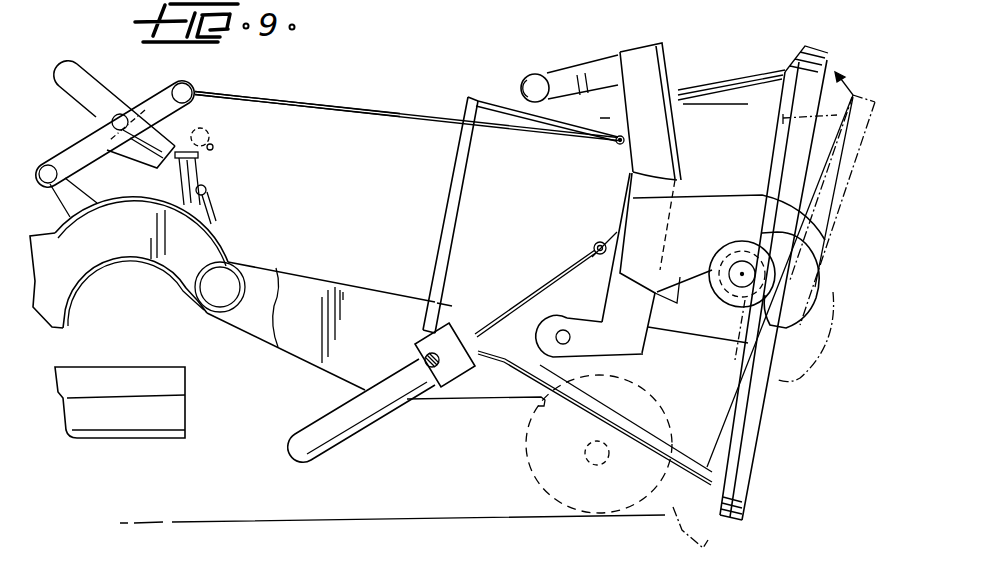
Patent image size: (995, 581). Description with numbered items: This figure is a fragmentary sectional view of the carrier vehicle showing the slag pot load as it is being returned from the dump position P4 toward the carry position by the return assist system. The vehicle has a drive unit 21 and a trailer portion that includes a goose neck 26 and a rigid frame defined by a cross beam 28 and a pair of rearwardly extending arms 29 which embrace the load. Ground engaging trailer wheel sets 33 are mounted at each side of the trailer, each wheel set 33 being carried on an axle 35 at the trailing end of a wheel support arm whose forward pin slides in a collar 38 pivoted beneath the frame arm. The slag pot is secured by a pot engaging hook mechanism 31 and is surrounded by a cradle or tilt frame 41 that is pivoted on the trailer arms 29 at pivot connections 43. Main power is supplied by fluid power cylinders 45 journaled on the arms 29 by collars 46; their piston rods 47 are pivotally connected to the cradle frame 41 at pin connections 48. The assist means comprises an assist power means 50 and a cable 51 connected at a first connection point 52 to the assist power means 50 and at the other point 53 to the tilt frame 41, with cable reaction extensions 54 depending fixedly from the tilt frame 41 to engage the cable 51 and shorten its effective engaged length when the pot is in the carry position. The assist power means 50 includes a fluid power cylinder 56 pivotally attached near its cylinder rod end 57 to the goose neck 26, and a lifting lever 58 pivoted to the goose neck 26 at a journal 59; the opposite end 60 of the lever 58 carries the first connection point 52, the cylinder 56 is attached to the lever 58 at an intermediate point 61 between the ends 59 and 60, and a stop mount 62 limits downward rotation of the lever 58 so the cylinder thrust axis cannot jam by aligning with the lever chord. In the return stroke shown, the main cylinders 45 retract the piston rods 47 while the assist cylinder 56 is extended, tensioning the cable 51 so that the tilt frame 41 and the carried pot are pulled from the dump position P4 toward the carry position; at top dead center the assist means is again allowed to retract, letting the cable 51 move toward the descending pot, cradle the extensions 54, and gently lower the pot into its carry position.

The drive unit 21 is at (151, 437).
The goose neck 26 is at (133, 250).
The cross beam 28 is at (203, 290).
The rearwardly extending arms 29 is at (360, 263).
The pot engaging hook mechanism 31 is at (820, 281).
The ground engaging trailer wheel sets 33 is at (550, 450).
The axle 35 is at (592, 462).
The collar 38 is at (528, 76).
The cradle frame 41 is at (667, 153).
The pivot connections 43 is at (562, 337).
The fluid power cylinders 45 is at (293, 448).
The collars 46 is at (413, 363).
The piston rods 47 is at (530, 277).
The pin connections 48 is at (594, 248).
The assist power means 50 is at (132, 80).
The cable 51 is at (378, 92).
The first connection point 52 is at (207, 88).
The other connection point 53 is at (617, 143).
The cable reaction structures or extensions 54 is at (563, 63).
The fluid power cylinder 56 is at (78, 47).
The cylinder rod end 57 is at (207, 188).
The lifting lever 58 is at (100, 150).
The journal 59 is at (45, 186).
The opposite end of lifting lever 60 is at (185, 92).
The intermediate attachment point 61 is at (111, 123).
The stop mount 62 is at (213, 148).
The dump position P4 is at (828, 209).